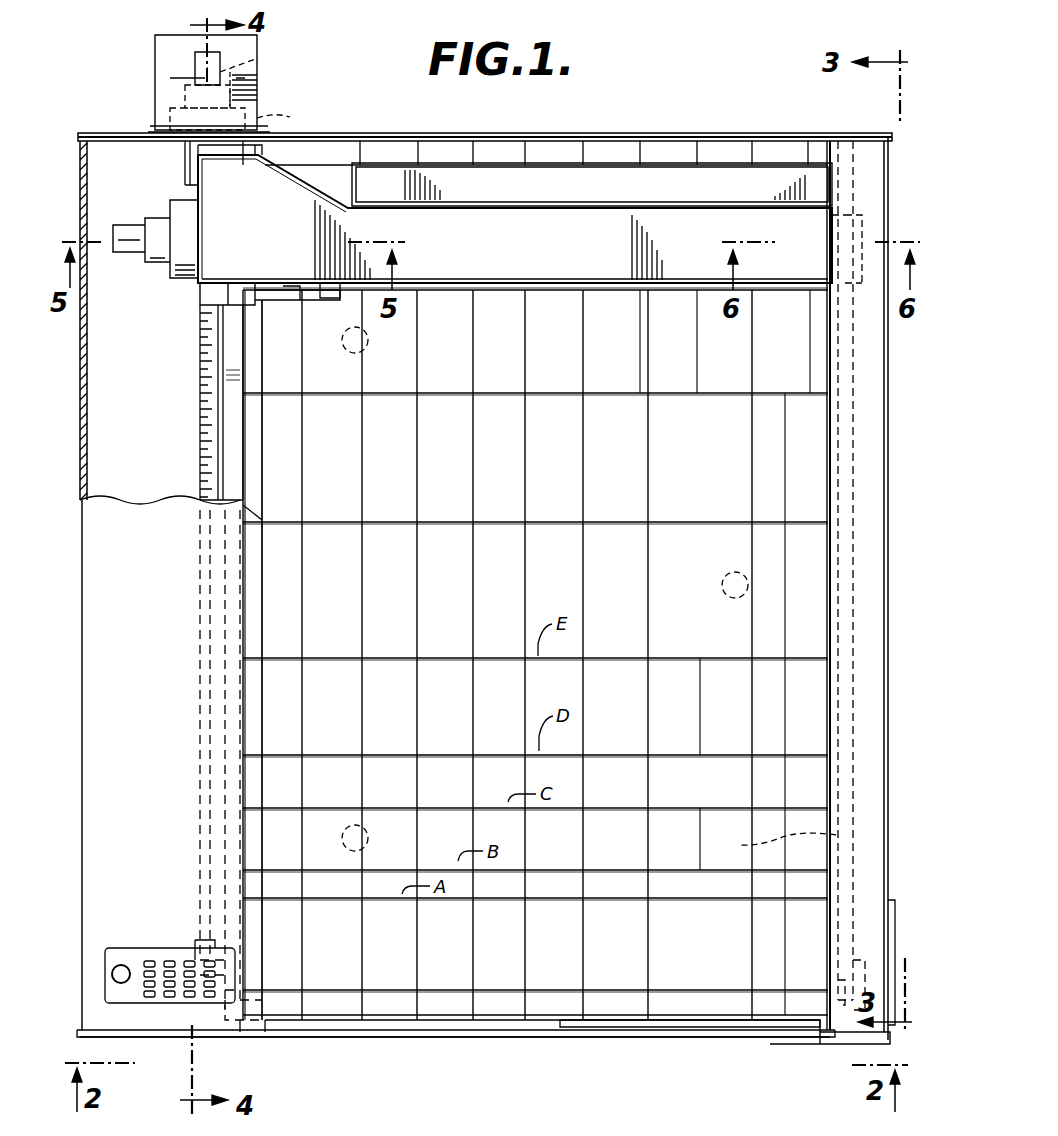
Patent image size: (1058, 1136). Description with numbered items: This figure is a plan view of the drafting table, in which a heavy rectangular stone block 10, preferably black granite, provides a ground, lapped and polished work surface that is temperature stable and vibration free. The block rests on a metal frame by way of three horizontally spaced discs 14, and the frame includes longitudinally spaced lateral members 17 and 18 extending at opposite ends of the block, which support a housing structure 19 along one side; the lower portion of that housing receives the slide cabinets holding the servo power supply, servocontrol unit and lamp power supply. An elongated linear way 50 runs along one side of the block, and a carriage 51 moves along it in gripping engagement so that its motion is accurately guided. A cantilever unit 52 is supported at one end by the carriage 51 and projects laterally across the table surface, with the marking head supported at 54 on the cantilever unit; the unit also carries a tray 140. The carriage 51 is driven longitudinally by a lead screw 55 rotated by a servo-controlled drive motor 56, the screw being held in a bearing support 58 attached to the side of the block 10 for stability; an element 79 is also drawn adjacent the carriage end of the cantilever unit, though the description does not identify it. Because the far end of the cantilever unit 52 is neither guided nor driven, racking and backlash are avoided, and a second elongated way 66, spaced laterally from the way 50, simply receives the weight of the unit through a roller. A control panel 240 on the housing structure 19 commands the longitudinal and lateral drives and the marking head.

The stone block 10 is at (536, 585).
The discs 14 is at (366, 352).
The lateral member 17 is at (444, 1030).
The lateral member 18 is at (495, 137).
The housing structure 19 is at (131, 765).
The linear way 50 is at (226, 383).
The carriage 51 is at (195, 291).
The cantilever unit 52 is at (531, 575).
The marking head support 54 is at (325, 300).
The lead screw 55 is at (205, 482).
The drive motor 56 is at (258, 60).
The bearing support 58 is at (240, 101).
The second elongated way 66 is at (740, 847).
The hand wheel shaft 79 is at (157, 212).
The tray 140 is at (592, 184).
The control panel 240 is at (165, 940).